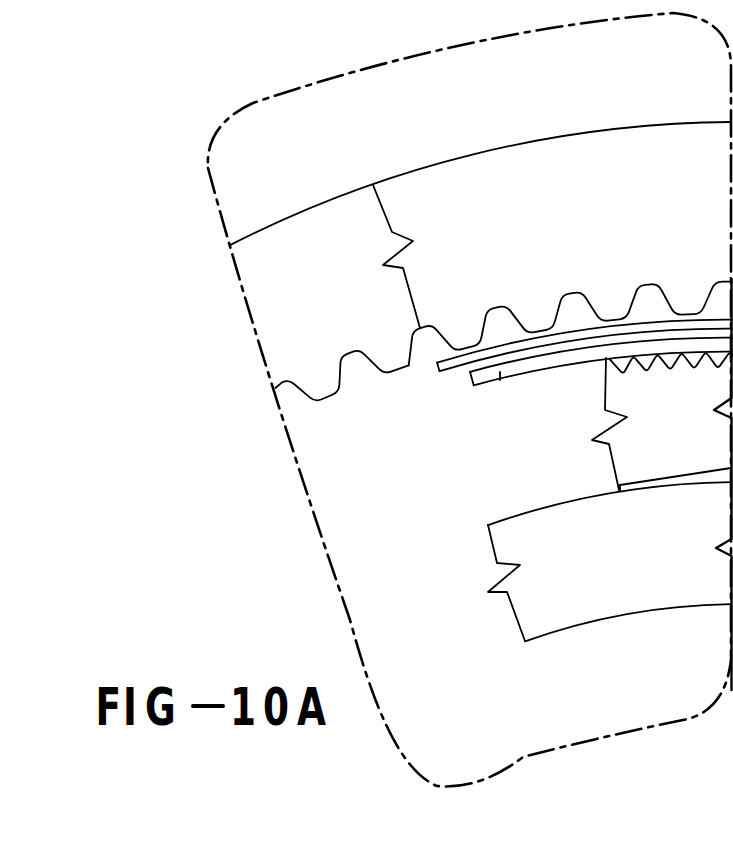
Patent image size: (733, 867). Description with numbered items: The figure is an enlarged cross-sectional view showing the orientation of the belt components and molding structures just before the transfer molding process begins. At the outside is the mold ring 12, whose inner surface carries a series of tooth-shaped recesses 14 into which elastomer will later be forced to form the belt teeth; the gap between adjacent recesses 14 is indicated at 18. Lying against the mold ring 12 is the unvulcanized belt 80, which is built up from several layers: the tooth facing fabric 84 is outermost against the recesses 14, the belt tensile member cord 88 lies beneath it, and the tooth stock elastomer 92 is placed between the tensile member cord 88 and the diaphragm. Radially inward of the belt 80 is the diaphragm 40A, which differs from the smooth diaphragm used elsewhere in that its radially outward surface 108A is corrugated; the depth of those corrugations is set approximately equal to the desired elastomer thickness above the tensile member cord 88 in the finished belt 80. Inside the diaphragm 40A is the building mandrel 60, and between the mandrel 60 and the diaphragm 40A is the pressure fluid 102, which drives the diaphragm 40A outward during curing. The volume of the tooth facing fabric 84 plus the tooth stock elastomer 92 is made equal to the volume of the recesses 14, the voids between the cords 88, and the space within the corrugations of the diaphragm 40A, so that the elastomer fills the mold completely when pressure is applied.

The mold ring 12 is at (520, 142).
The recesses 14 is at (507, 318).
The slot 18 is at (335, 404).
The radially outward surface 108A is at (667, 370).
The unvulcanized belt 80 is at (551, 404).
The tooth facing fabric 84 is at (446, 373).
The belt tensile member cord 88 is at (481, 380).
The tooth stock elastomer 92 is at (508, 401).
The diaphragm 40A is at (663, 467).
The building mandrel 60 is at (505, 547).
The pressure fluid 102 is at (694, 480).